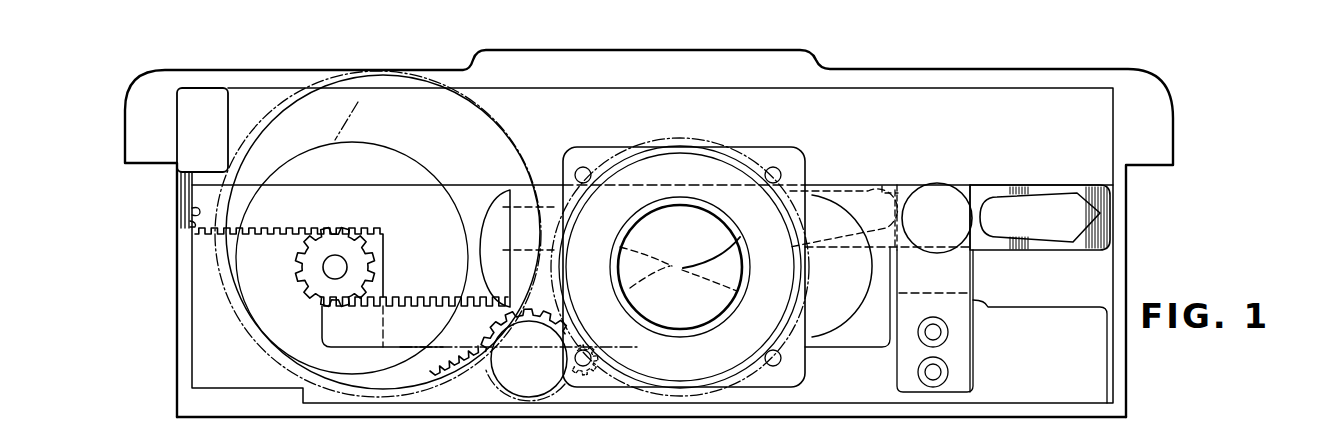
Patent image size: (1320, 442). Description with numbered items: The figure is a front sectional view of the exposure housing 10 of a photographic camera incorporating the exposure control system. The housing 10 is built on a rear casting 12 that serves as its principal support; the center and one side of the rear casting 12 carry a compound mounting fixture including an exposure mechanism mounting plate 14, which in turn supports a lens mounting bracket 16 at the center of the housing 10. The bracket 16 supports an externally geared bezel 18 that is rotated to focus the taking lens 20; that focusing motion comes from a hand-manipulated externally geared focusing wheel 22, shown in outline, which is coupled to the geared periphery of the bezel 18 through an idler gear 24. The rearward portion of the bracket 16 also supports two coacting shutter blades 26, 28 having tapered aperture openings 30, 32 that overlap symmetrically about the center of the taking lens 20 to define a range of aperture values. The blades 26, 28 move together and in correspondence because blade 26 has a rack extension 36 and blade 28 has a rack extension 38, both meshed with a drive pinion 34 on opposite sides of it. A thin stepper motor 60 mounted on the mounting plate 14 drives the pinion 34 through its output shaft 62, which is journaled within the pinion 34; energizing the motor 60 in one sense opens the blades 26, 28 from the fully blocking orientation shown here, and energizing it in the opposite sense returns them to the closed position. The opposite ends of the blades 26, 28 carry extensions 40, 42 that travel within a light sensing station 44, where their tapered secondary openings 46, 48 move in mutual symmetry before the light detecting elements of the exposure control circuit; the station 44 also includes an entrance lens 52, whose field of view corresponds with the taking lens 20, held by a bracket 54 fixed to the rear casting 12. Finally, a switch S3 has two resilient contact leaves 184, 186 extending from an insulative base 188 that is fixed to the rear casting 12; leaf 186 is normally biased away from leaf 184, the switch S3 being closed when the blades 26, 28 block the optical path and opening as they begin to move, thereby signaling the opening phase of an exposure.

The exposure housing 10 is at (1203, 197).
The rear casting 12 is at (963, 409).
The exposure mechanism mounting plate 14 is at (420, 143).
The lens mounting bracket 16 is at (677, 405).
The externally geared bezel 18 is at (745, 143).
The taking lens 20 is at (700, 227).
The focusing wheel 22 is at (470, 347).
The idler gear 24 is at (563, 408).
The shutter blade 26 is at (468, 200).
The shutter blade 28 is at (982, 192).
The tapered aperture opening 30 is at (495, 200).
The tapered aperture opening 32 is at (857, 320).
The drive pinion 34 is at (370, 275).
The rack extension 36 is at (335, 207).
The rack extension 38 is at (363, 333).
The blade extension 40 is at (888, 185).
The blade extension 42 is at (1102, 183).
The light sensing station 44 is at (1038, 102).
The tapered secondary opening 46 is at (845, 183).
The tapered secondary opening 48 is at (1033, 190).
The lens 52 is at (933, 180).
The bracket 54 is at (953, 345).
The stepper motor 60 is at (358, 102).
The output shaft 62 is at (333, 265).
The resilient contact leaf 184 is at (177, 185).
The resilient contact leaf 186 is at (190, 222).
The insulative base 188 is at (198, 143).
The switch S3 is at (243, 47).